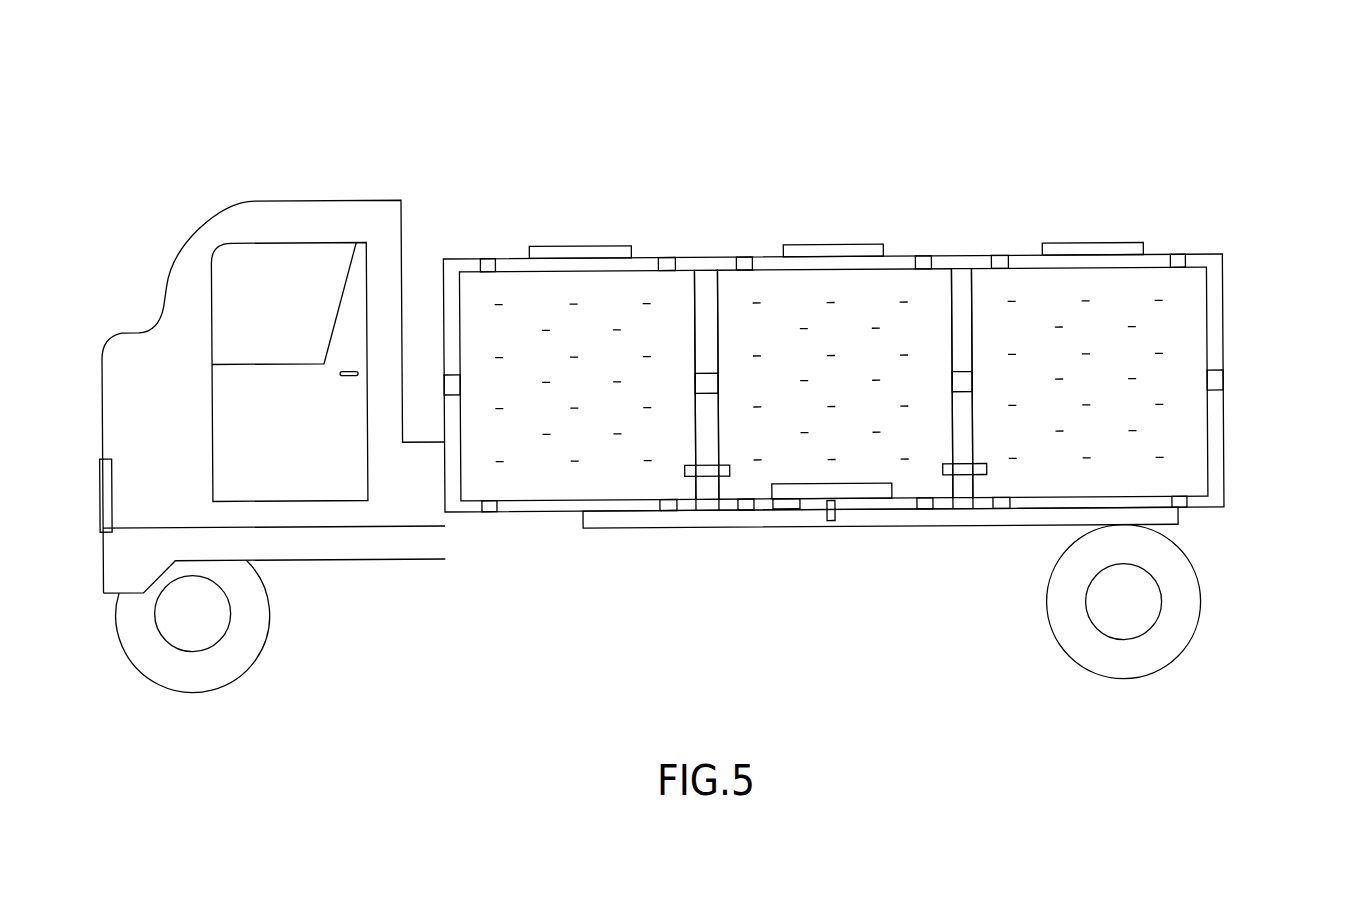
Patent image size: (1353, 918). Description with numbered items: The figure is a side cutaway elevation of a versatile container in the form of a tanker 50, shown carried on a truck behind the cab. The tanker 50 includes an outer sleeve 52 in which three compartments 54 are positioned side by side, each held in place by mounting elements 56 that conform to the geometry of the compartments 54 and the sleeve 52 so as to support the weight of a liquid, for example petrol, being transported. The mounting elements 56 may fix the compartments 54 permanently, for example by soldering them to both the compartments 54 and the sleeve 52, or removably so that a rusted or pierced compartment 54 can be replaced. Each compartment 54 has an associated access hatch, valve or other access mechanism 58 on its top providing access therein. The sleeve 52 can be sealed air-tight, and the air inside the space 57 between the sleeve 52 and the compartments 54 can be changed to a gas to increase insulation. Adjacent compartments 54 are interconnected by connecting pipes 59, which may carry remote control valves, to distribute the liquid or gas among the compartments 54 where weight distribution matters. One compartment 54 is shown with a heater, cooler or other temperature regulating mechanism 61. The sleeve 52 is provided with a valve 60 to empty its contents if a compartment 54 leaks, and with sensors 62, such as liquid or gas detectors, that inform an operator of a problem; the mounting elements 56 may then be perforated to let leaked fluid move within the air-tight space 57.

The tanker 50 is at (855, 331).
The sleeve 52 is at (1225, 295).
The compartment 54 is at (945, 266).
The mounting element 56 is at (493, 259).
The air-tight space 57 is at (703, 280).
The access mechanism 58 is at (580, 247).
The connecting pipe 59 is at (707, 479).
The valve 60 is at (830, 523).
The temperature regulating mechanism 61 is at (878, 488).
The sensors 62 is at (787, 511).